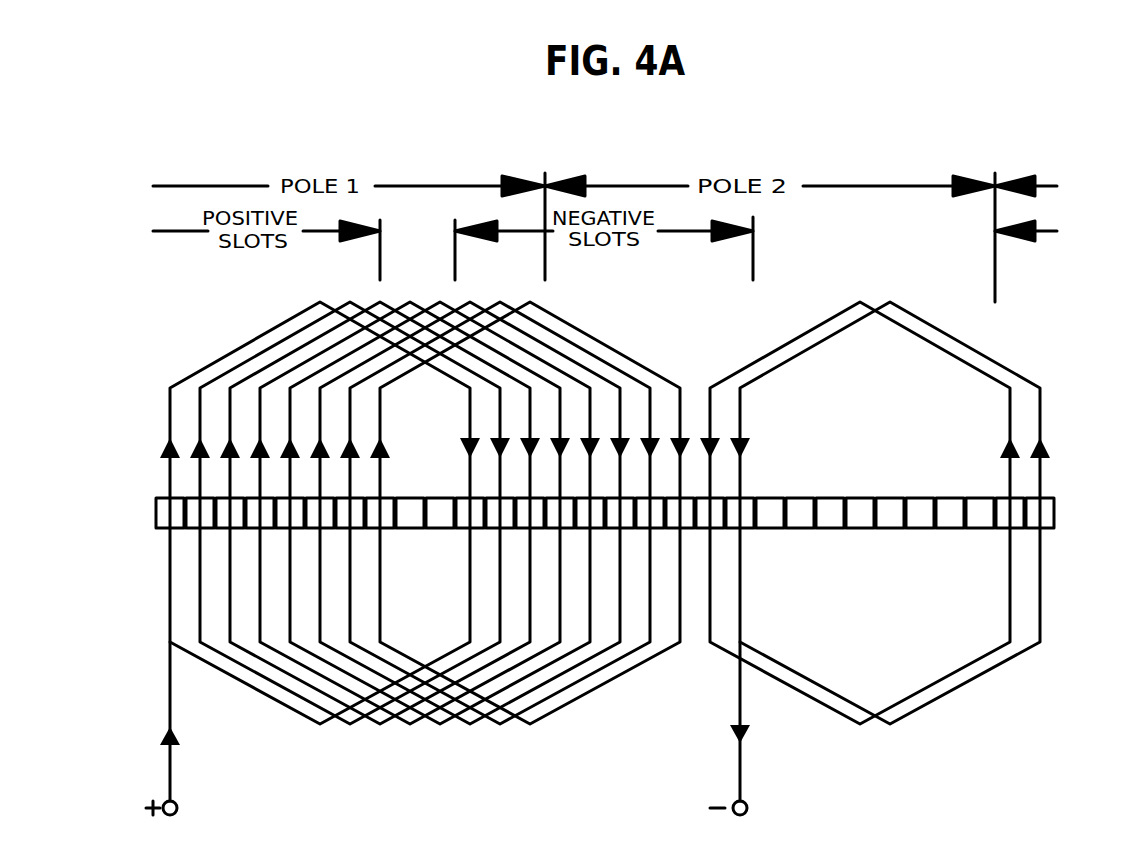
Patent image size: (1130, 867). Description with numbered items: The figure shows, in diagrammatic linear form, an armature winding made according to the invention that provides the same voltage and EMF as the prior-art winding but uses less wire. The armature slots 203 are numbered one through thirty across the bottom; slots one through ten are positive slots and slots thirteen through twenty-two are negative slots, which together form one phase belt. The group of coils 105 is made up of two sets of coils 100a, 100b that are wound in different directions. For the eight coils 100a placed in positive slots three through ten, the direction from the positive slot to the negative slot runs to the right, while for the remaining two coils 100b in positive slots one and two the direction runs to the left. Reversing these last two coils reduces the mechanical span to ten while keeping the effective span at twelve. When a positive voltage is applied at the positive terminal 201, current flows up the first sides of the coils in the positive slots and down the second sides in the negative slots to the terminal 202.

The first set of coils 100a is at (422, 511).
The second set of coils 100b is at (1013, 310).
The group of coils 105 is at (694, 372).
The slots 203 is at (820, 490).
The positive terminal 201 is at (183, 793).
The negative terminal 202 is at (756, 795).